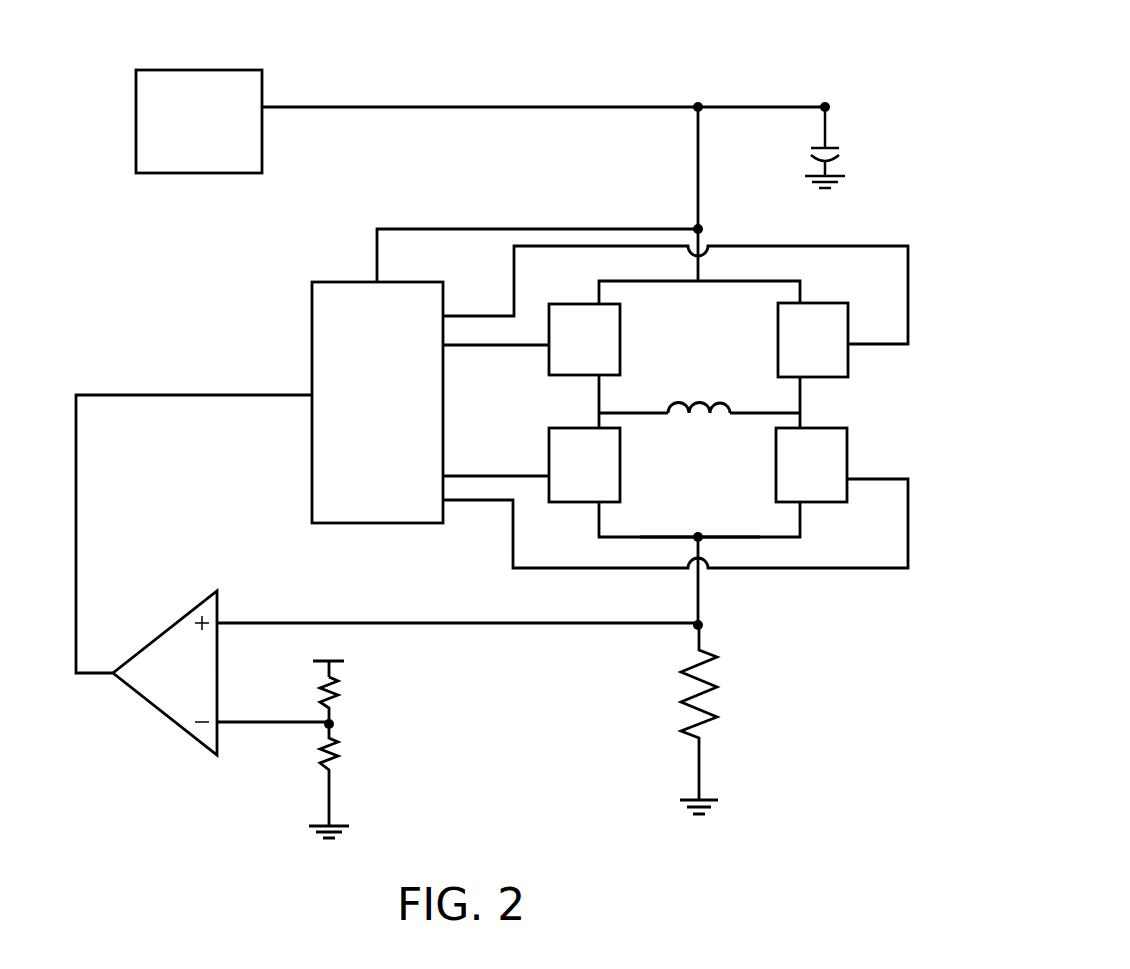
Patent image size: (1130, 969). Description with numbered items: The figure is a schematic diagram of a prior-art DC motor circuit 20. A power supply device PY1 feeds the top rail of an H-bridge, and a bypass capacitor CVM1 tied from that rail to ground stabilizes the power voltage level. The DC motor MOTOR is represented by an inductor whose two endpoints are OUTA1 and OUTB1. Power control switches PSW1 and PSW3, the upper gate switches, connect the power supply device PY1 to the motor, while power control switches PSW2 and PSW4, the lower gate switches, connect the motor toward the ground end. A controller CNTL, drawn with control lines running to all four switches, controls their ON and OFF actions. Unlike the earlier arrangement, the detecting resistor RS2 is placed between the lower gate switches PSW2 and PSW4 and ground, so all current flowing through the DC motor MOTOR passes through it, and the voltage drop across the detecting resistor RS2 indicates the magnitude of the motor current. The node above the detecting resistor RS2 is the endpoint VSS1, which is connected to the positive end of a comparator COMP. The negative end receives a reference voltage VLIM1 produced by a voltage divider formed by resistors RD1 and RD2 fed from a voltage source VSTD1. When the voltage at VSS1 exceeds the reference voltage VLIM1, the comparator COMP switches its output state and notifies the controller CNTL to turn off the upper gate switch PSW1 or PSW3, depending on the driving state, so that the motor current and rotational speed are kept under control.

The DC motor circuit 20 is at (975, 86).
The power supply device PY1 is at (152, 70).
The bypass capacitor CVM1 is at (853, 147).
The controller CNTL is at (312, 468).
The power control switch PSW1 is at (584, 339).
The power control switch PSW2 is at (811, 465).
The power control switch PSW3 is at (813, 340).
The power control switch PSW4 is at (584, 465).
The DC motor MOTOR is at (691, 394).
The endpoint of the motor OUTA1 is at (590, 401).
The endpoint of the motor OUTB1 is at (802, 402).
The endpoint VSS1 is at (700, 522).
The detecting resistor RS2 is at (724, 719).
The comparator COMP is at (167, 632).
The voltage source VSTD1 is at (344, 655).
The resistor RD1 is at (355, 700).
The resistor RD2 is at (349, 781).
The reference voltage VLIM1 is at (333, 722).